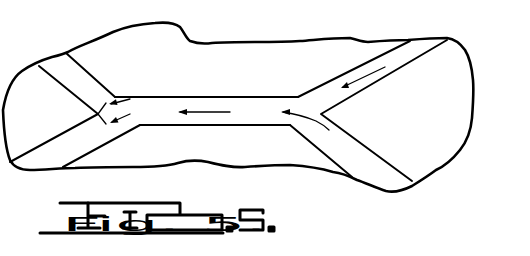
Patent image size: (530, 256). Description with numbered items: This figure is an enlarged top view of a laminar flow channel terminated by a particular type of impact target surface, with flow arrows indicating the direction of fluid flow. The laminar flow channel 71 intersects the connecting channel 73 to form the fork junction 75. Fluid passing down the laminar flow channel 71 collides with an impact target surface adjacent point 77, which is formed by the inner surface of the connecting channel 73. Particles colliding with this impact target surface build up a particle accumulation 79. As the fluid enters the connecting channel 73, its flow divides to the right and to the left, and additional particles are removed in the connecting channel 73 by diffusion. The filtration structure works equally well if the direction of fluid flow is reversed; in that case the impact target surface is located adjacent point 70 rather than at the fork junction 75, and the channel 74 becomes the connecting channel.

The point 70 is at (326, 113).
The laminar flow channel 71 is at (245, 124).
The connecting channel 73 is at (47, 79).
The channel 74 is at (387, 178).
The fork junction 75 is at (88, 115).
The point 77 is at (94, 106).
The particle accumulation 79 is at (114, 82).